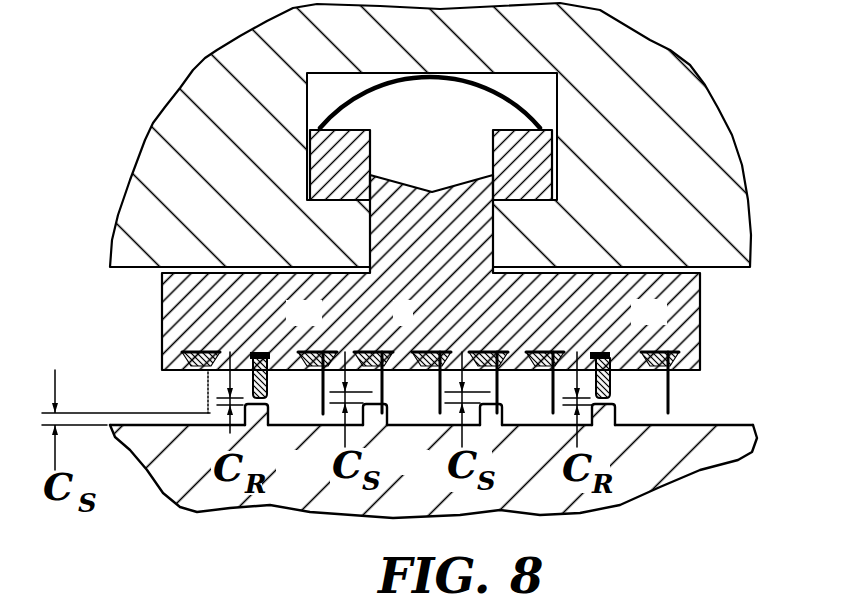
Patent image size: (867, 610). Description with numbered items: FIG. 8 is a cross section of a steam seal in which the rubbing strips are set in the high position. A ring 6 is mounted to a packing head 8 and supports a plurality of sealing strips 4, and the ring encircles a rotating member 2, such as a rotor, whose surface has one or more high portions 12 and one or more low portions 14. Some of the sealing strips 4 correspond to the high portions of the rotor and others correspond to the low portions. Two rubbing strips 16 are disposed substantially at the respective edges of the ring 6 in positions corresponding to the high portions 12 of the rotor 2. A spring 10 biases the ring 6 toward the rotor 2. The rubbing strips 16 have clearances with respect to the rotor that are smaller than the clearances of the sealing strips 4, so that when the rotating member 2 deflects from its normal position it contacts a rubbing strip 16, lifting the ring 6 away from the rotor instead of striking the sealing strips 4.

The packing head 8 is at (197, 90).
The spring 10 is at (481, 85).
The ring 6 is at (681, 304).
The rubbing strips 16 is at (259, 352).
The sealing strips 4 is at (438, 398).
The high portions 12 is at (263, 430).
The low portions 14 is at (425, 428).
The rotating member 2 is at (172, 463).